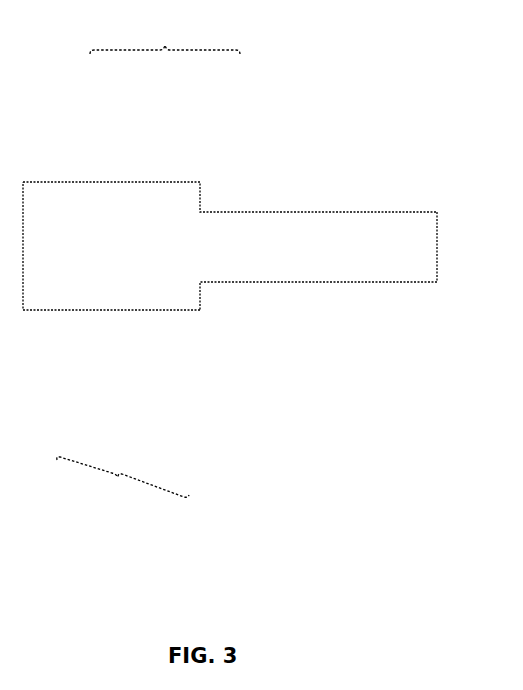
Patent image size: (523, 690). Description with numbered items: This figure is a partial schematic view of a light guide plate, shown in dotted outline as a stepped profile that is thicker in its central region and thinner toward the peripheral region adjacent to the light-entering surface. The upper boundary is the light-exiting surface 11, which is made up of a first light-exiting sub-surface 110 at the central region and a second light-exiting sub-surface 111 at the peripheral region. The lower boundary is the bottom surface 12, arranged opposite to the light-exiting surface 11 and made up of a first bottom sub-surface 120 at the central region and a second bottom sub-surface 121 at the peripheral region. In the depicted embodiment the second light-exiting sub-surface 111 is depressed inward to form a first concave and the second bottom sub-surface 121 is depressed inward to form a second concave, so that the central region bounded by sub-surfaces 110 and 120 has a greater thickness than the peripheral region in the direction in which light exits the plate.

The light-exiting surface 11 is at (165, 33).
The bottom surface 12 is at (123, 491).
The first light-exiting sub-surface 110 is at (170, 181).
The second light-exiting sub-surface 111 is at (288, 211).
The first bottom sub-surface 120 is at (102, 311).
The second bottom sub-surface 121 is at (287, 283).